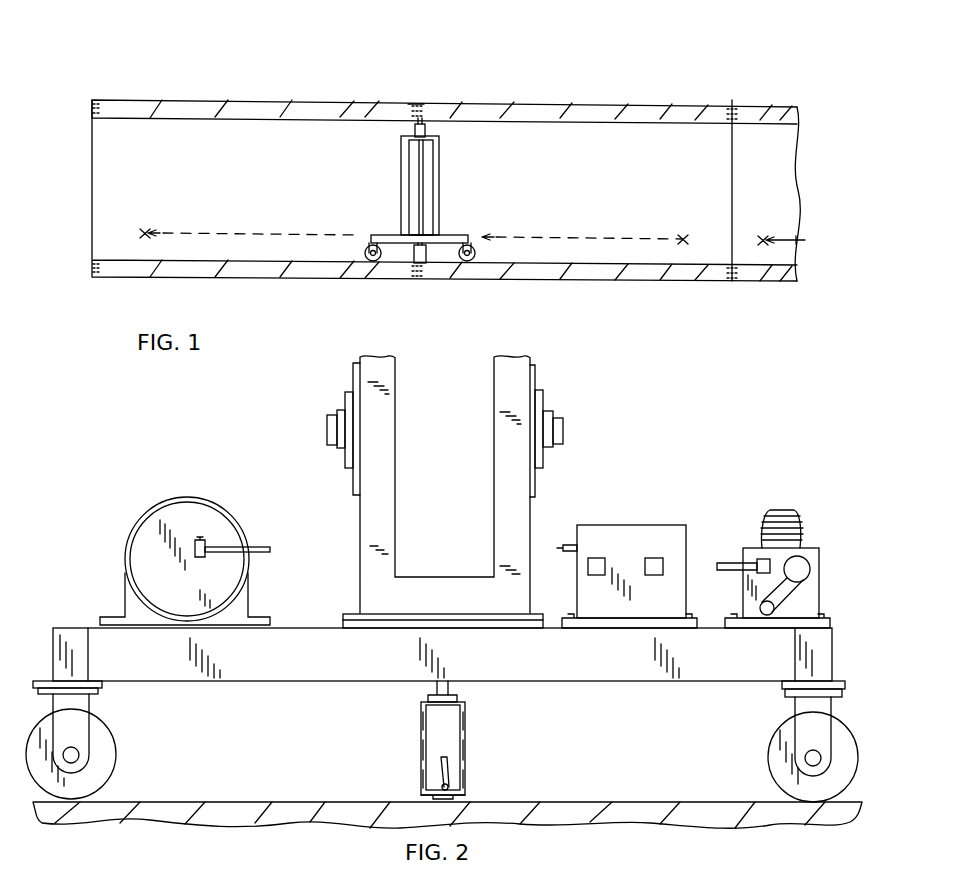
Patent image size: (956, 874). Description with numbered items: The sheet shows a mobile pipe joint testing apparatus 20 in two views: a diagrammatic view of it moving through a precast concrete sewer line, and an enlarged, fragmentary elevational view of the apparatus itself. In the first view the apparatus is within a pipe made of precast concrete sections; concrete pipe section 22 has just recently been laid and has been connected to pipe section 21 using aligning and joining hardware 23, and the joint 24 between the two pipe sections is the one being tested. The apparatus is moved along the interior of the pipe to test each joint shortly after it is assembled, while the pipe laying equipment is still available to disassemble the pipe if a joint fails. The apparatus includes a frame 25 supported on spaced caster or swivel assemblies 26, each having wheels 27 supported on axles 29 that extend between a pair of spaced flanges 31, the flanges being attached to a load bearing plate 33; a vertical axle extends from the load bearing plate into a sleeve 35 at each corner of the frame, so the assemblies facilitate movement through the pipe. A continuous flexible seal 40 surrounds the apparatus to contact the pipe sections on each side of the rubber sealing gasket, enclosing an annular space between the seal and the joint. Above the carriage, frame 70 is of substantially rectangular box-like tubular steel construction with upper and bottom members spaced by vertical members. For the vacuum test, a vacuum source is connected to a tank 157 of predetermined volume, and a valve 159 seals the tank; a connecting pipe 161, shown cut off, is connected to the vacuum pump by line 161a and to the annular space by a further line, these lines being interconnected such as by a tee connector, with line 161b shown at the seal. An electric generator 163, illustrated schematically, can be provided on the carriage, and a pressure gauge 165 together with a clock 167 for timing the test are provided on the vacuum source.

In FIG. 1, the mobile testing apparatus 20 is at (456, 183).
In FIG. 2, the mobile testing apparatus 20 is at (278, 451).
In FIG. 1, the pipe section 21 is at (576, 107).
In FIG. 1, the concrete pipe section 22 is at (288, 105).
In FIG. 1, the aligning and joining hardware 23 is at (98, 100).
In FIG. 1, the joint 24 is at (415, 104).
In FIG. 2, the frame 25 is at (507, 668).
In FIG. 2, the caster or swivel assemblies 26 is at (34, 672).
In FIG. 2, the wheels 27 is at (108, 740).
In FIG. 2, the axles 29 is at (78, 755).
In FIG. 2, the flanges 31 is at (797, 710).
In FIG. 2, the load bearing plate 33 is at (845, 694).
In FIG. 2, the sleeve 35 is at (72, 632).
In FIG. 1, the continuous flexible seal 40 is at (410, 128).
In FIG. 2, the continuous flexible seal 40 is at (497, 770).
In FIG. 2, the frame 70 is at (355, 562).
In FIG. 2, the tank 157 is at (148, 527).
In FIG. 2, the valve 159 is at (200, 557).
In FIG. 2, the connecting pipe 161 is at (262, 548).
In FIG. 2, the line 161a is at (563, 548).
In FIG. 2, the sensor cable 161b is at (440, 775).
In FIG. 2, the electric generator 163 is at (824, 546).
In FIG. 2, the pressure gauge 165 is at (612, 552).
In FIG. 2, the clock 167 is at (666, 562).